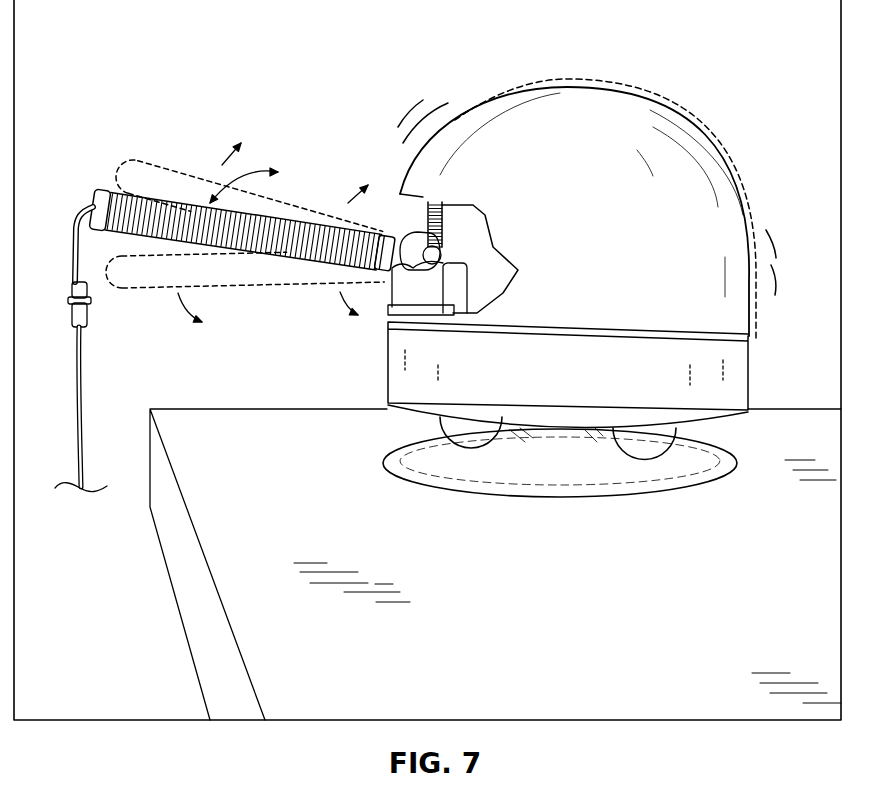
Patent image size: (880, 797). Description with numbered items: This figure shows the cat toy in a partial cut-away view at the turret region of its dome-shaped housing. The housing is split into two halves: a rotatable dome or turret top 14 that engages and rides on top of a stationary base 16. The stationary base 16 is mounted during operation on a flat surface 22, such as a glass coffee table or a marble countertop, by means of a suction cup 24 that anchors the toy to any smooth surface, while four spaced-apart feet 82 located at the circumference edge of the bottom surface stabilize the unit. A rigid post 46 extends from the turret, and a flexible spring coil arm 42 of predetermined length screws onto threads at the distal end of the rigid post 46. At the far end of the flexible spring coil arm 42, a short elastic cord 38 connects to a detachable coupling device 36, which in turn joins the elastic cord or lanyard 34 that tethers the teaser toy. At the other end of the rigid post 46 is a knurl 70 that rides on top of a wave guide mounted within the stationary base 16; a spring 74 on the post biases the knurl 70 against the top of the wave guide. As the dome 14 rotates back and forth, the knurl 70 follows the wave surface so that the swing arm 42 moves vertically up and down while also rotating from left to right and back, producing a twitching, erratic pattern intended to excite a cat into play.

The rotatable dome or turret top 14 is at (595, 247).
The stationary base 16 is at (595, 392).
The flat surface 22 is at (279, 517).
The suction cup 24 is at (510, 480).
The elastic cord or lanyard 34 is at (85, 388).
The detachable coupling device 36 is at (88, 315).
The short elastic cord 38 is at (75, 213).
The flexible spring coil arm 42 is at (147, 202).
The rigid post 46 is at (393, 256).
The knurl 70 is at (405, 240).
The spring 74 is at (426, 205).
The feet 82 is at (458, 436).